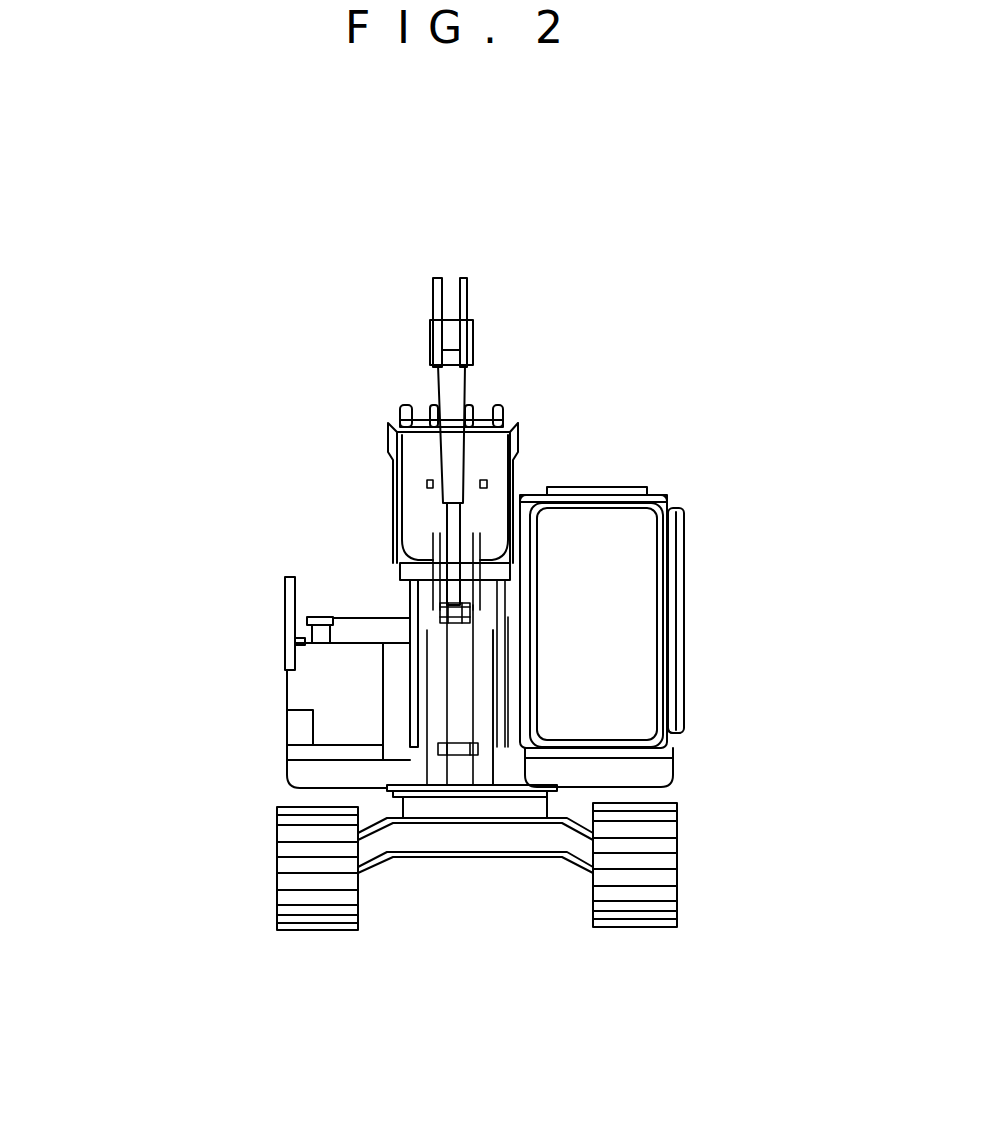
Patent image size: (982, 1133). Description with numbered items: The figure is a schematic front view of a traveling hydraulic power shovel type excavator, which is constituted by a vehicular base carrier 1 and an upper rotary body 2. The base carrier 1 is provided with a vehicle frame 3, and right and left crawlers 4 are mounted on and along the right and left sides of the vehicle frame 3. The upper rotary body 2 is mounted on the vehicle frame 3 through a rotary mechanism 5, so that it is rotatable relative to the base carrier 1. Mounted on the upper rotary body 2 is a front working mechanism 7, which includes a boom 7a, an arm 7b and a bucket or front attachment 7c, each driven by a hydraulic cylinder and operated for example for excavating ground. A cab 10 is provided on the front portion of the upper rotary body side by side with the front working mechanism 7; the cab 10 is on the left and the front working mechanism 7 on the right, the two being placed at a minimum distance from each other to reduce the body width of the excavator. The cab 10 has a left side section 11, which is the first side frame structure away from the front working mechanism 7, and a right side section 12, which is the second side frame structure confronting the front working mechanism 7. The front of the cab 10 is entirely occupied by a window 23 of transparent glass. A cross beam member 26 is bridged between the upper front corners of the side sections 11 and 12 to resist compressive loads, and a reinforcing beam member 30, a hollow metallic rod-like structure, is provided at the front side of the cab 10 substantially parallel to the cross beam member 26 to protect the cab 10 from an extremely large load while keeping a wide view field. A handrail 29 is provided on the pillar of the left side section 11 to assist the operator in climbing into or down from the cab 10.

The vehicular base carrier 1 is at (564, 939).
The upper rotary body 2 is at (268, 743).
The vehicle frame 3 is at (523, 842).
The crawlers 4 is at (322, 907).
The rotary mechanism 5 is at (423, 808).
The front working mechanism 7 is at (431, 437).
The boom 7a is at (437, 648).
The arm 7b is at (452, 383).
The bucket 7c is at (420, 503).
The cab 10 is at (692, 548).
The left side section 11 is at (677, 708).
The right side section 12 is at (520, 717).
The front window 23 is at (613, 597).
The cross beam member 26 is at (545, 485).
The handrail 29 is at (682, 570).
The reinforcing beam member 30 is at (653, 485).